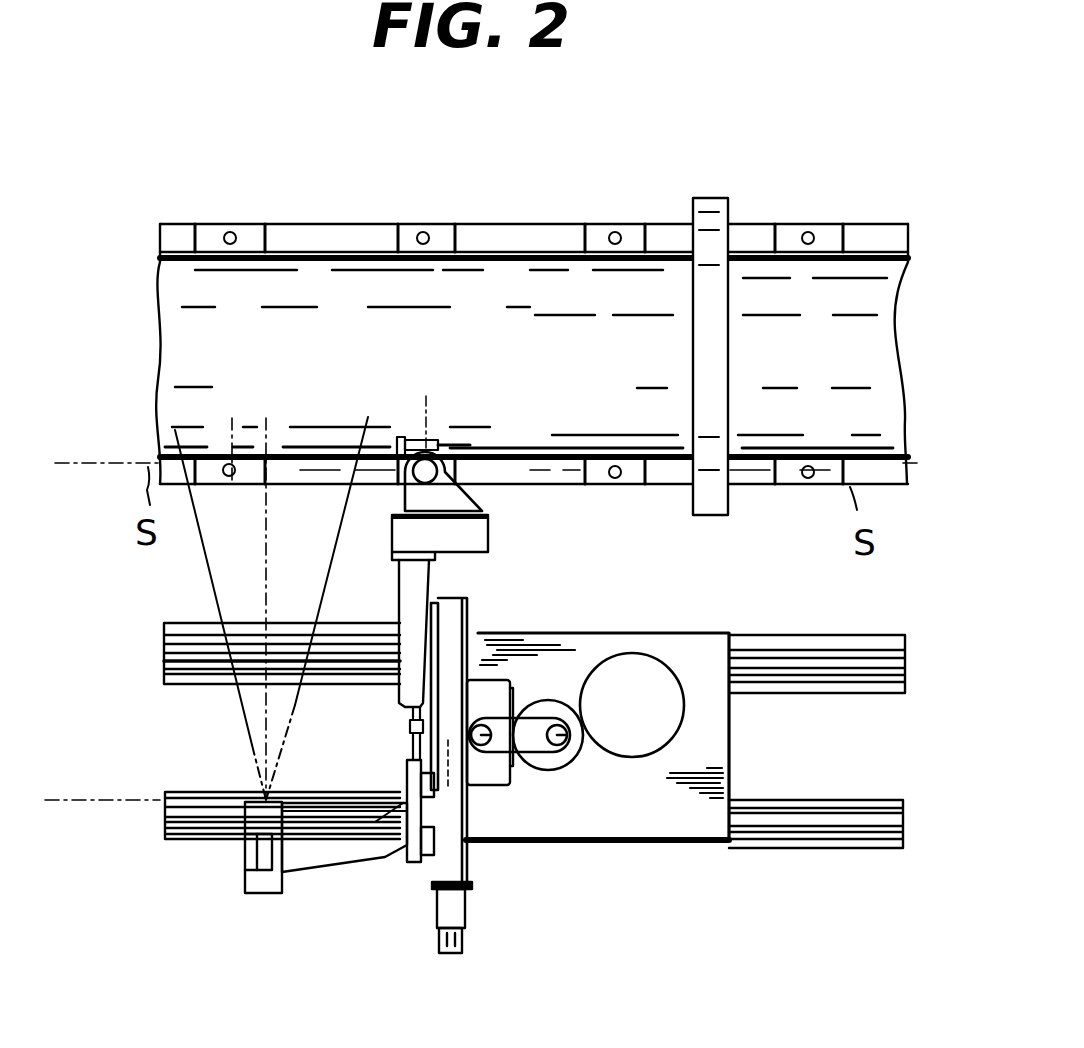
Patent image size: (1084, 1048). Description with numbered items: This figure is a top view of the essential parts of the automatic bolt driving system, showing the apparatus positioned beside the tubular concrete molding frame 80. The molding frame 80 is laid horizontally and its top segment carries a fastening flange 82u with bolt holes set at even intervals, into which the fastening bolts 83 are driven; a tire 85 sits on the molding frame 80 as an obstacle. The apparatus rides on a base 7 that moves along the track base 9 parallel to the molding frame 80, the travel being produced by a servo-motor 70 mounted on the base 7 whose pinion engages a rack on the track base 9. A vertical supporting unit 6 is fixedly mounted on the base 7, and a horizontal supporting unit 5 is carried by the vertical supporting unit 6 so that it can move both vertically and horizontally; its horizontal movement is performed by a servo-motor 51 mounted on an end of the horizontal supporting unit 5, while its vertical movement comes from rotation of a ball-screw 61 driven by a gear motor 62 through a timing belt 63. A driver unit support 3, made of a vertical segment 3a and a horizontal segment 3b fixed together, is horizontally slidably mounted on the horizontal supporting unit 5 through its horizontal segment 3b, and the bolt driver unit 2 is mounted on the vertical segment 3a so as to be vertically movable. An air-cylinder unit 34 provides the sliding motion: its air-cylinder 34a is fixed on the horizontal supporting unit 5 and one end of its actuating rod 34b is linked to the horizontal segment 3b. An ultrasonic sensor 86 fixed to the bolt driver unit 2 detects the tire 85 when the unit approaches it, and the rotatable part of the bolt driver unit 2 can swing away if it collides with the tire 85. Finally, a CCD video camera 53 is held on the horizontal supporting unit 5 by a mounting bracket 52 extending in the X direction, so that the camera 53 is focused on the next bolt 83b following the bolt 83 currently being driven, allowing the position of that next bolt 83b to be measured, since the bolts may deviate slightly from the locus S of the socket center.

The bolt driver unit 2 is at (462, 472).
The driver unit support 3 is at (471, 539).
The vertical segment 3a is at (473, 530).
The horizontal segment 3b is at (398, 584).
The horizontal supporting unit 5 is at (437, 860).
The vertical supporting unit 6 is at (485, 802).
The base 7 is at (682, 856).
The track base 9 is at (826, 700).
The air-cylinder unit 34 is at (405, 770).
The air-cylinder 34a is at (403, 844).
The actuating rod 34b is at (410, 735).
The servo-motor 51 is at (437, 936).
The mounting bracket 52 is at (344, 870).
The video camera 53 is at (248, 880).
The ball-screw 61 is at (497, 788).
The gear motor 62 is at (575, 748).
The timing belt 63 is at (527, 752).
The servo-motor 70 is at (665, 680).
The concrete molding frame 80 is at (487, 300).
The fastening flange 82u is at (572, 245).
The fastening bolt 83 is at (230, 226).
The next bolt 83b is at (225, 487).
The tire 85 is at (722, 375).
The ultrasonic sensor 86 is at (412, 450).